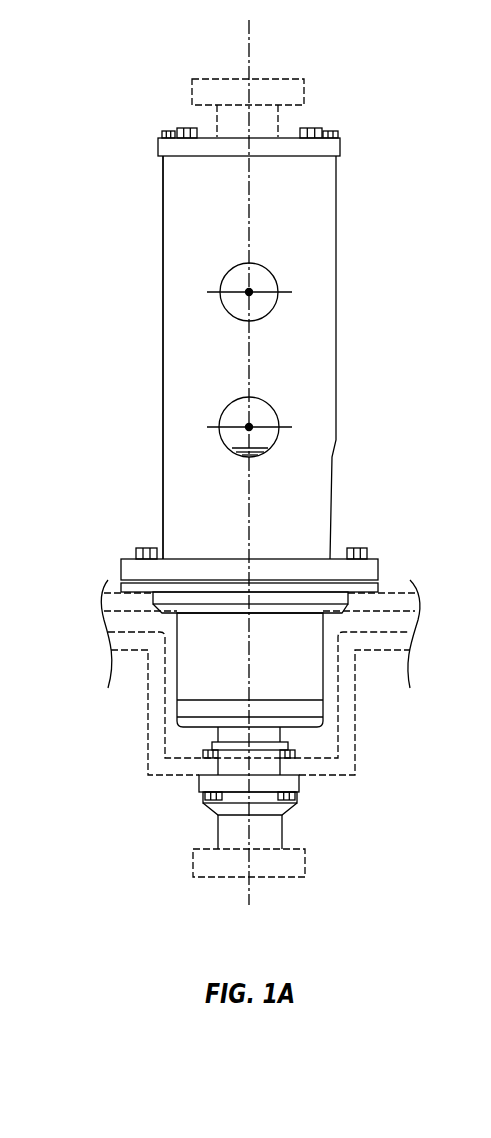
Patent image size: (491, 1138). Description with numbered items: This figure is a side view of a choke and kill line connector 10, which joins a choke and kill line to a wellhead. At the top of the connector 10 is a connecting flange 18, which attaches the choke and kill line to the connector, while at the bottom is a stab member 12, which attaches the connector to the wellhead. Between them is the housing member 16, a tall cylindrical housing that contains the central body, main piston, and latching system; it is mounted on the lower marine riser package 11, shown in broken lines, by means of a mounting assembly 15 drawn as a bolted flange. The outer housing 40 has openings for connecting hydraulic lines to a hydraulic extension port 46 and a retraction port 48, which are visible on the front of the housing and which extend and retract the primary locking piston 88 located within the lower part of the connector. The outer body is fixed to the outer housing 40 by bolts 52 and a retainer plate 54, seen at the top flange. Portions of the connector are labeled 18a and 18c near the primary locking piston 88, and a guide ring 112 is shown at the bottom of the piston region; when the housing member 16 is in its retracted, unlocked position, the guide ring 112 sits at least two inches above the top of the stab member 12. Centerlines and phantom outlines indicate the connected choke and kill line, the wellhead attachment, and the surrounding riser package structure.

The choke and kill line connector 10 is at (106, 108).
The connecting flange 18 is at (208, 78).
The housing member 16 is at (216, 348).
The outer housing 40 is at (116, 357).
The bolts 52 is at (340, 106).
The retainer plate 54 is at (366, 117).
The hydraulic extension port 46 is at (295, 271).
The retraction port 48 is at (296, 408).
The mounting assembly 15 is at (211, 556).
The lower marine riser package 11 is at (232, 670).
The inner cylinder 18a is at (199, 670).
The primary locking piston 88 is at (297, 699).
The lower cylinder band 18c is at (199, 740).
The guide ring 112 is at (301, 744).
The stab member 12 is at (213, 802).